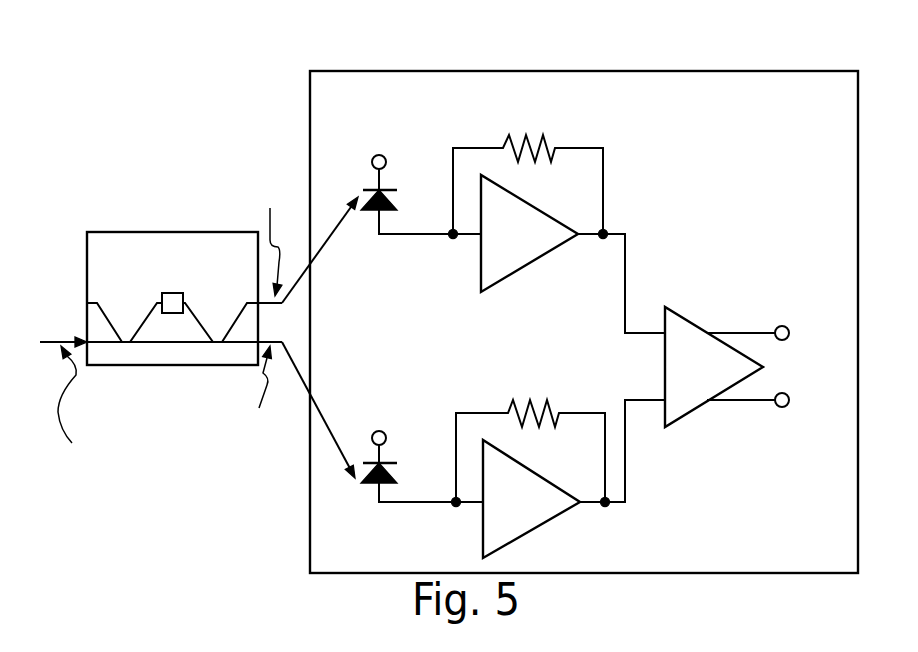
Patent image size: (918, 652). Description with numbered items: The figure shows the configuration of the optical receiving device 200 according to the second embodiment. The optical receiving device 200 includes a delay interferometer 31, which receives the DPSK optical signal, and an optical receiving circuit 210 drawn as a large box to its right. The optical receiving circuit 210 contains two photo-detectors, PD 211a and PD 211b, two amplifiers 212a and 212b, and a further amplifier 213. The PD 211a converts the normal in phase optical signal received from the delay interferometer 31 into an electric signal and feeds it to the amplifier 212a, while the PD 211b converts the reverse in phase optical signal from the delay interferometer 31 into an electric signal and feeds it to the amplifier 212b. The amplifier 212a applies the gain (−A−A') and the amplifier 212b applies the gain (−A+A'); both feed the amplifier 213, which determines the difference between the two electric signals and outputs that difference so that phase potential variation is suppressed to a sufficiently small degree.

The optical receiving device 200 is at (261, 92).
The optical receiving circuit 210 is at (655, 72).
The delay interferometer 31 is at (113, 232).
The photo-detector 211a is at (405, 158).
The photo-detector 211b is at (425, 407).
The amplifier 212a is at (537, 279).
The amplifier 212b is at (558, 529).
The amplifier 213 is at (700, 312).